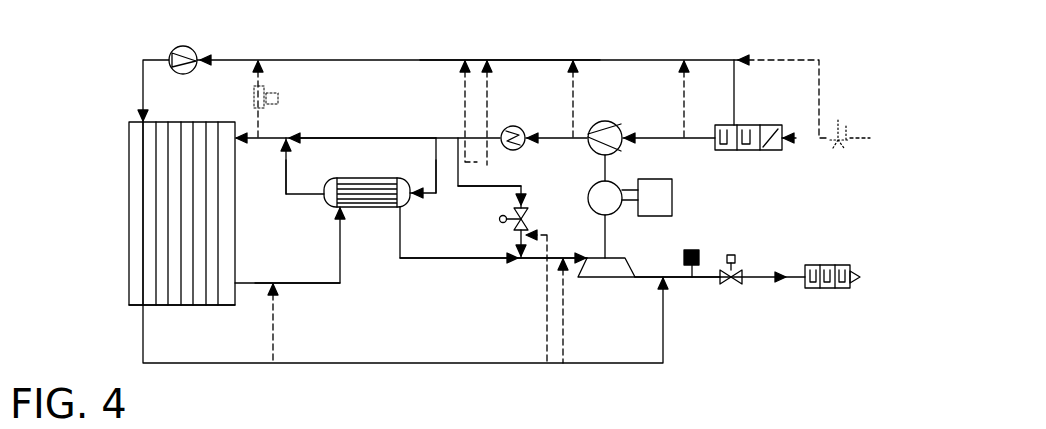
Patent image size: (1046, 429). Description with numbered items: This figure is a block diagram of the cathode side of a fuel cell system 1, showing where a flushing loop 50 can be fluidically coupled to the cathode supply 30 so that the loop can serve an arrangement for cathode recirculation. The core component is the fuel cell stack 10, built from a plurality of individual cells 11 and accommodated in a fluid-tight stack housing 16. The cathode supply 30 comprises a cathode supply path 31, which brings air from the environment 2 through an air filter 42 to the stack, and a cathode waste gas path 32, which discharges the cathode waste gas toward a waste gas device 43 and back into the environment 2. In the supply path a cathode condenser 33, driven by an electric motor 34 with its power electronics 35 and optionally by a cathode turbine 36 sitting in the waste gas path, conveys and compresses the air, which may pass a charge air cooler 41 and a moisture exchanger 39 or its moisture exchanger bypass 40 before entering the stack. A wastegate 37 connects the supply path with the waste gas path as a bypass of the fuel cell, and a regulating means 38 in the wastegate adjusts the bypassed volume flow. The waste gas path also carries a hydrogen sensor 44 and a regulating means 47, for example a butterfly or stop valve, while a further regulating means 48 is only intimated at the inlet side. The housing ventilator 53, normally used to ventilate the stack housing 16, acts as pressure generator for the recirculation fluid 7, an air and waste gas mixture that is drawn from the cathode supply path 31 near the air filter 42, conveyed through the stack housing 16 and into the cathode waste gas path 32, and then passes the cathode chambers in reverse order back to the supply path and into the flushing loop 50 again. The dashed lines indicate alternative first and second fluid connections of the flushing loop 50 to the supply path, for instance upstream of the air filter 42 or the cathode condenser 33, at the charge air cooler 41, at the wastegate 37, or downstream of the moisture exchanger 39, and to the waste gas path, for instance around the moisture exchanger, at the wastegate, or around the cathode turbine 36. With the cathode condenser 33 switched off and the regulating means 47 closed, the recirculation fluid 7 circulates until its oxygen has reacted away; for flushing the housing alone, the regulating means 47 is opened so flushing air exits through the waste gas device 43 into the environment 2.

The fuel cell system 1 is at (405, 35).
The environment 2 is at (895, 148).
The recirculation fluid 7 is at (509, 59).
The fuel cell stack 10 is at (115, 144).
The individual cells 11 is at (161, 222).
The stack housing 16 is at (187, 305).
The cathode supply 30 is at (441, 235).
The cathode supply path 31 is at (436, 172).
The cathode waste gas path 32 is at (316, 283).
The cathode condenser 33 is at (606, 117).
The electric motor 34 is at (613, 214).
The power electronics 35 is at (662, 202).
The cathode turbine 36 is at (608, 271).
The wastegate 37 is at (486, 187).
The regulating means 38 is at (525, 213).
The moisture exchanger 39 is at (360, 197).
The moisture exchanger bypass 40 is at (412, 138).
The charge air cooler 41 is at (525, 128).
The air filter 42 is at (767, 127).
The waste gas device 43 is at (840, 288).
The hydrogen sensor 44 is at (699, 251).
The regulating means 47 is at (743, 282).
The regulating means 48 is at (845, 117).
The flushing loop 50 is at (186, 108).
The housing ventilator 53 is at (184, 46).